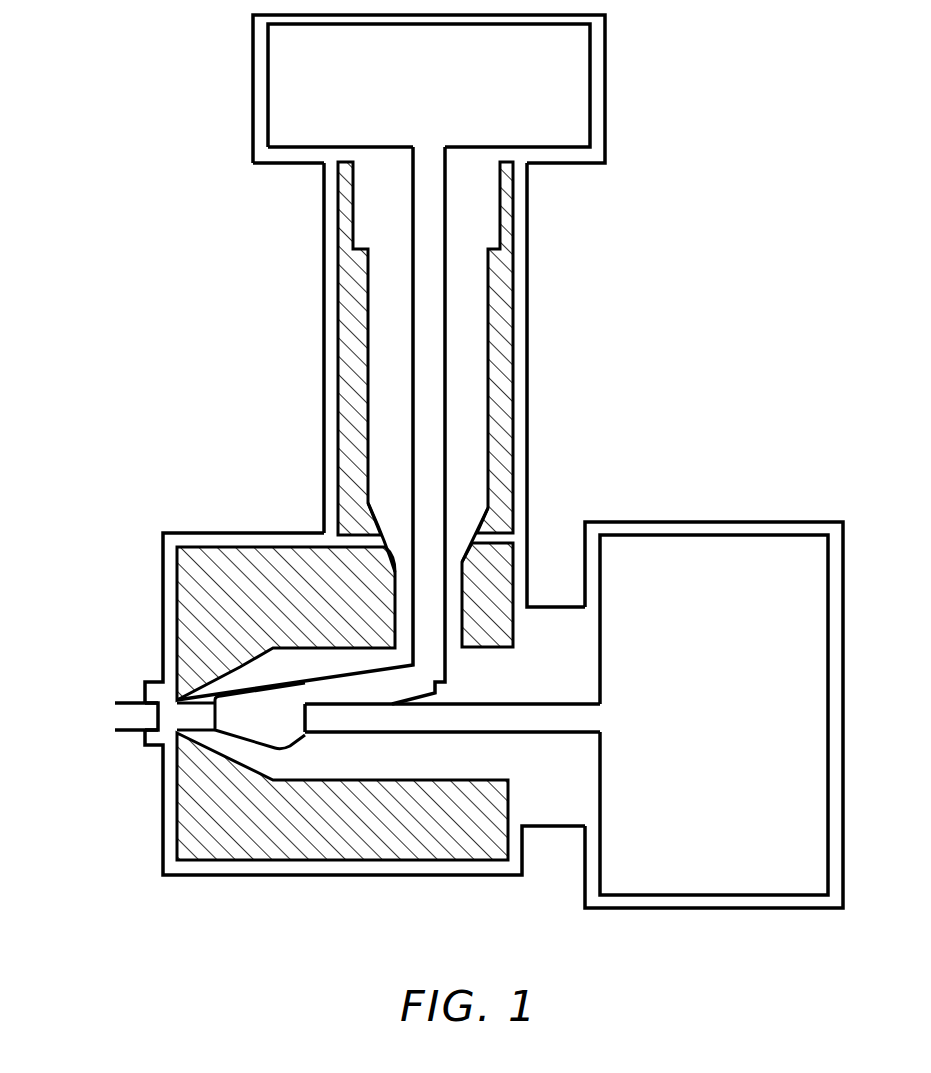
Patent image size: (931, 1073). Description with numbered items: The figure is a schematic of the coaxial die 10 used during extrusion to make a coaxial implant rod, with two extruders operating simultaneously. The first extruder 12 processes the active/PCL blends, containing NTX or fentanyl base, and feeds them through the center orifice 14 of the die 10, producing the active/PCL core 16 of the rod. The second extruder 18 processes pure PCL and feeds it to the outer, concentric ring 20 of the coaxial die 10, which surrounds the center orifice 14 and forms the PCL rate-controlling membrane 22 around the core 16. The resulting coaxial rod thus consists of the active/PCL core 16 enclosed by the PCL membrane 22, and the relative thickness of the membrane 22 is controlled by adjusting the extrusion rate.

The coaxial die 10 is at (706, 307).
The first extruder 12 is at (709, 714).
The center orifice 14 is at (452, 717).
The active/PCL core 16 is at (133, 718).
The second extruder 18 is at (404, 95).
The outer concentric ring 20 is at (255, 704).
The PCL rate-controlling membrane 22 is at (122, 700).